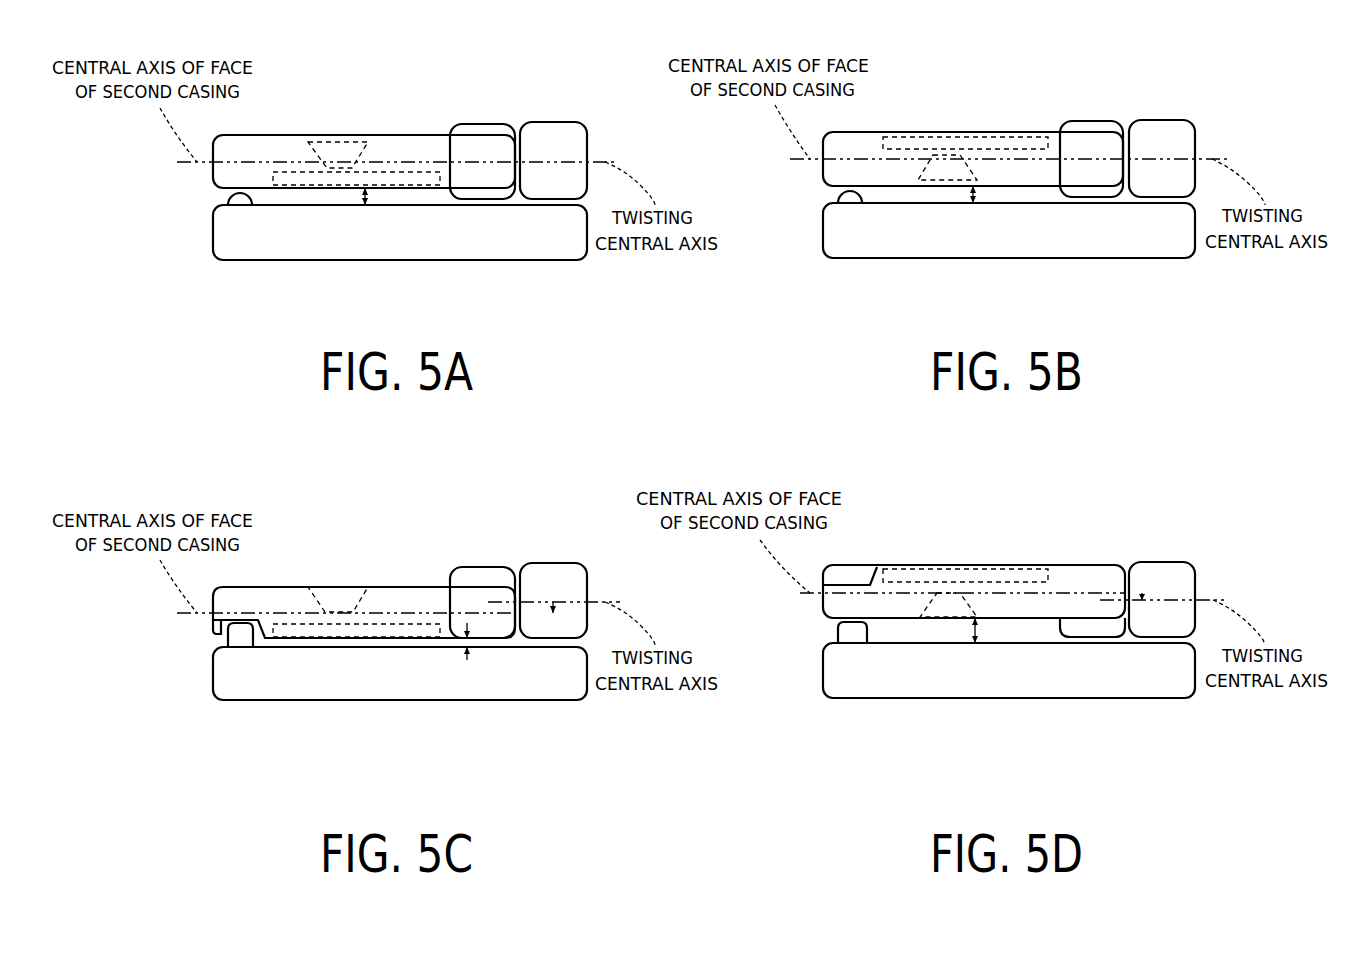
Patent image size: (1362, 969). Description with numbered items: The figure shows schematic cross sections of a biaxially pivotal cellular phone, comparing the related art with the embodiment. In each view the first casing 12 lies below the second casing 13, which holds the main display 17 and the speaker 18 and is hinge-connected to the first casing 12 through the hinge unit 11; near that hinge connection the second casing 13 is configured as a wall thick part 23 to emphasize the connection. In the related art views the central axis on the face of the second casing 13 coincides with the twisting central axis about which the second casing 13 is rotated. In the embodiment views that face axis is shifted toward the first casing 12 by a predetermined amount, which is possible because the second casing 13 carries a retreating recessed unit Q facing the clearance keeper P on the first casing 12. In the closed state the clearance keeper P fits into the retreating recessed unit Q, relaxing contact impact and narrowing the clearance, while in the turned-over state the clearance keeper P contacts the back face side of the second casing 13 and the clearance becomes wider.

In FIG. 5A, the hinge unit 11 is at (555, 122).
In FIG. 5B, the hinge unit 11 is at (1165, 120).
In FIG. 5C, the hinge unit 11 is at (555, 563).
In FIG. 5D, the hinge unit 11 is at (1165, 562).
In FIG. 5A, the first casing 12 is at (343, 243).
In FIG. 5B, the first casing 12 is at (953, 243).
In FIG. 5C, the first casing 12 is at (345, 686).
In FIG. 5D, the first casing 12 is at (953, 683).
In FIG. 5A, the second casing 13 is at (413, 135).
In FIG. 5B, the second casing 13 is at (1025, 132).
In FIG. 5C, the second casing 13 is at (413, 587).
In FIG. 5D, the second casing 13 is at (1025, 565).
In FIG. 5A, the main display 17 is at (300, 172).
In FIG. 5B, the main display 17 is at (910, 137).
In FIG. 5C, the main display 17 is at (300, 624).
In FIG. 5D, the main display 17 is at (910, 569).
In FIG. 5A, the speaker 18 is at (345, 142).
In FIG. 5B, the speaker 18 is at (948, 155).
In FIG. 5C, the speaker 18 is at (345, 587).
In FIG. 5D, the speaker 18 is at (948, 593).
In FIG. 5A, the wall thick part 23 is at (485, 124).
In FIG. 5B, the wall thick part 23 is at (1095, 121).
In FIG. 5C, the wall thick part 23 is at (485, 567).
In FIG. 5D, the wall thick part 23 is at (1097, 637).
In FIG. 5C, the clearance keeper P is at (242, 647).
In FIG. 5D, the clearance keeper P is at (852, 643).
In FIG. 5C, the retreating recessed unit Q is at (213, 634).
In FIG. 5D, the retreating recessed unit Q is at (865, 575).